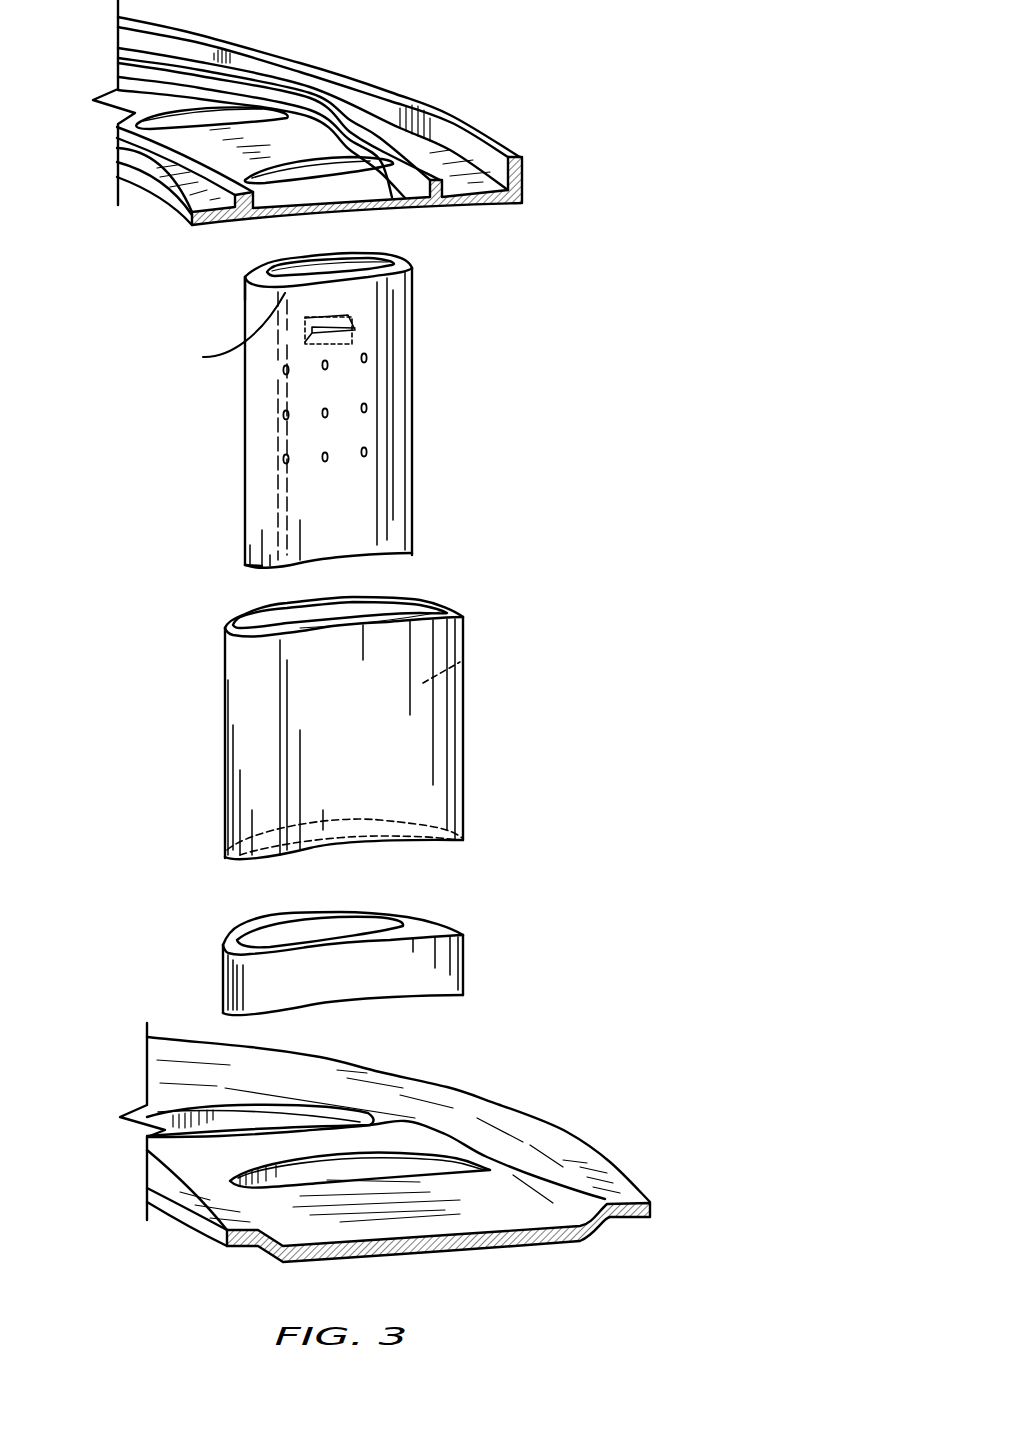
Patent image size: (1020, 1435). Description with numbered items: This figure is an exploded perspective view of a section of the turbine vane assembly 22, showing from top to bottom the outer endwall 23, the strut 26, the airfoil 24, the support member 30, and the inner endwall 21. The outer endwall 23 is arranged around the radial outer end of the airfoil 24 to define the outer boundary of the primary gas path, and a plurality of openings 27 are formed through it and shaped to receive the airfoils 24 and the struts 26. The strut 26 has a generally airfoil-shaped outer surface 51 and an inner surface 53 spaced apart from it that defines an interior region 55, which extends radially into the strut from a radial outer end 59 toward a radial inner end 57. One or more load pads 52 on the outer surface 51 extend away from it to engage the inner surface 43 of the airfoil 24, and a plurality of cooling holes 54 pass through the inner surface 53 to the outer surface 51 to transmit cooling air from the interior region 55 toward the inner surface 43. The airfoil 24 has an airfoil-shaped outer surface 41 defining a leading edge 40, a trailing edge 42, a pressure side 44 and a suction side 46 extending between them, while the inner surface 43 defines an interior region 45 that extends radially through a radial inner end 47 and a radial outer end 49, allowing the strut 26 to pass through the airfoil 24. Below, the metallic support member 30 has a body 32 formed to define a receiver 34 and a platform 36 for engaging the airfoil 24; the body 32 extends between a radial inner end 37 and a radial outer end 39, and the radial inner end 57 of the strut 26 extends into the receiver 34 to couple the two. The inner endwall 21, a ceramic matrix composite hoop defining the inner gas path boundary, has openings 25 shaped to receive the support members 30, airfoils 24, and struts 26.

The inner endwall 21 is at (437, 1142).
The turbine vane assembly 22 is at (675, 113).
The outer endwall 23 is at (378, 112).
The airfoil 24 is at (400, 716).
The openings 25 is at (388, 1168).
The strut 26 is at (373, 397).
The openings 27 is at (325, 168).
The support member 30 is at (413, 957).
The body 32 is at (265, 965).
The receiver 34 is at (263, 933).
The platform 36 is at (428, 928).
The radial inner end 37 is at (467, 993).
The radial outer end 39 is at (470, 933).
The leading edge 40 is at (225, 712).
The outer surface 41 is at (383, 632).
The trailing edge 42 is at (465, 722).
The inner surface 43 is at (340, 605).
The pressure side 44 is at (397, 722).
The interior region 45 is at (273, 605).
The suction side 46 is at (448, 665).
The radial inner end 47 is at (477, 838).
The radial outer end 49 is at (480, 608).
The outer surface 51 is at (226, 333).
The load pads 52 is at (355, 317).
The inner surface 53 is at (281, 272).
The cooling holes 54 is at (326, 360).
The interior region 55 is at (364, 262).
The radial inner end 57 is at (238, 547).
The radial outer end 59 is at (223, 280).